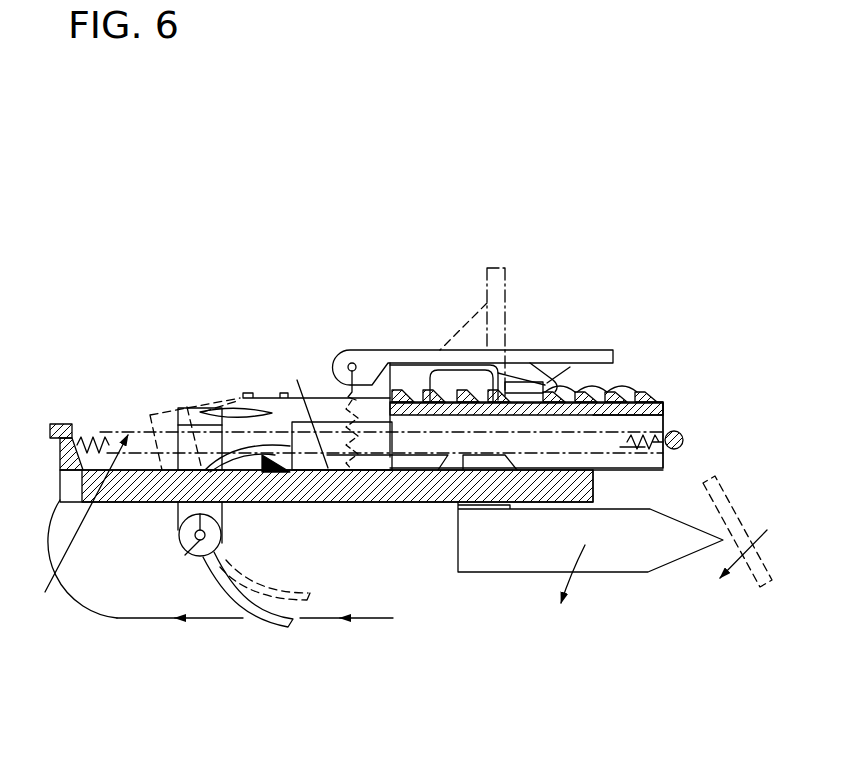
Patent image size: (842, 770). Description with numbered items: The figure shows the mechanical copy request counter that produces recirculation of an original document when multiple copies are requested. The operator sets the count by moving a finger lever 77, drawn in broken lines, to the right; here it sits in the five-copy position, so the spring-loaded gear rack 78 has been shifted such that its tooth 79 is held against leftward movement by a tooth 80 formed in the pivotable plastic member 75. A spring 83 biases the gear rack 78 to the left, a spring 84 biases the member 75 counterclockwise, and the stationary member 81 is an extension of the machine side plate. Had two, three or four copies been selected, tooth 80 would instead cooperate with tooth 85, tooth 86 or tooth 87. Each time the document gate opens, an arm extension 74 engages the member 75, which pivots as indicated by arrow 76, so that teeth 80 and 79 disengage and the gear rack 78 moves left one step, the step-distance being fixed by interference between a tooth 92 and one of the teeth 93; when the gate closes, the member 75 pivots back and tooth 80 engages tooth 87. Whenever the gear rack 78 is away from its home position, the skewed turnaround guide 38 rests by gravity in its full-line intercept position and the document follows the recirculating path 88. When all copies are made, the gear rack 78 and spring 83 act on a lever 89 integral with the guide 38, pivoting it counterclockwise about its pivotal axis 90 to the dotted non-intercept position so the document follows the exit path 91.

The skewed turnaround guide 38 is at (265, 627).
The arm extension 74 is at (715, 476).
The pivotable plastic member 75 is at (630, 562).
The arrow 76 is at (573, 583).
The finger lever 77 is at (487, 268).
The spring-loaded gear rack 78 is at (663, 404).
The tooth 79 is at (395, 388).
The tooth 80 is at (377, 348).
The stationary member 81 is at (80, 526).
The spring 83 is at (643, 447).
The spring 84 is at (340, 415).
The tooth 85 is at (500, 378).
The tooth 86 is at (462, 373).
The tooth 87 is at (425, 390).
The recirculating path 88 is at (393, 618).
The lever 89 is at (193, 412).
The pivotal axis 90 is at (197, 540).
The exit path 91 is at (100, 618).
The tooth 92 is at (568, 350).
The teeth 93 is at (650, 392).